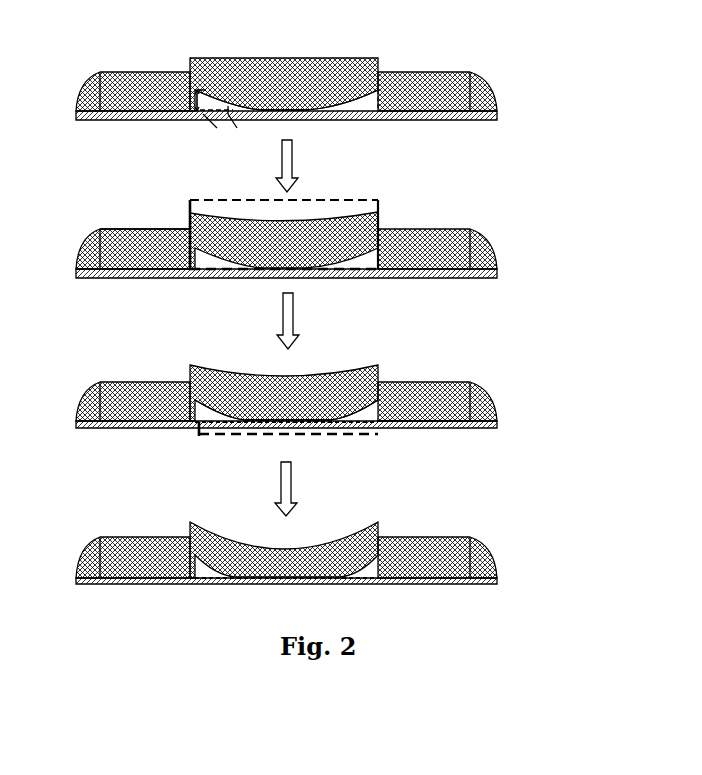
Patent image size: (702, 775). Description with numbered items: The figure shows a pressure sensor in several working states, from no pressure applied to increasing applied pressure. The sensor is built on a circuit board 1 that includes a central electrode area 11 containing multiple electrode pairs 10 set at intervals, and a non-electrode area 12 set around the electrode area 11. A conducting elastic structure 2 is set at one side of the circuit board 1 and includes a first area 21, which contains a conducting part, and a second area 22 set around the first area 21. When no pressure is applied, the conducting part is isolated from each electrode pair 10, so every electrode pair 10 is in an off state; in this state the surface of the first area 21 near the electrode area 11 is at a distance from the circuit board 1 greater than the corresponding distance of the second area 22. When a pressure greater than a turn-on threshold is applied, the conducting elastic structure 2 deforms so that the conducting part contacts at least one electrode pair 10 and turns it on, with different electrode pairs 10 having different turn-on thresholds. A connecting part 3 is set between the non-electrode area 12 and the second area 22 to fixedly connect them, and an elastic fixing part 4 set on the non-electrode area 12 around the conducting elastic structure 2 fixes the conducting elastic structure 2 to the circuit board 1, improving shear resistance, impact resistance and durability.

The circuit board 1 is at (423, 117).
The conducting elastic structure 2 is at (357, 63).
The connecting part 3 is at (378, 112).
The elastic fixing part 4 is at (490, 100).
The electrode pair 10 is at (247, 117).
The electrode area 11 is at (328, 435).
The non-electrode area 12 is at (400, 428).
The first area 21 is at (347, 200).
The second area 22 is at (143, 252).